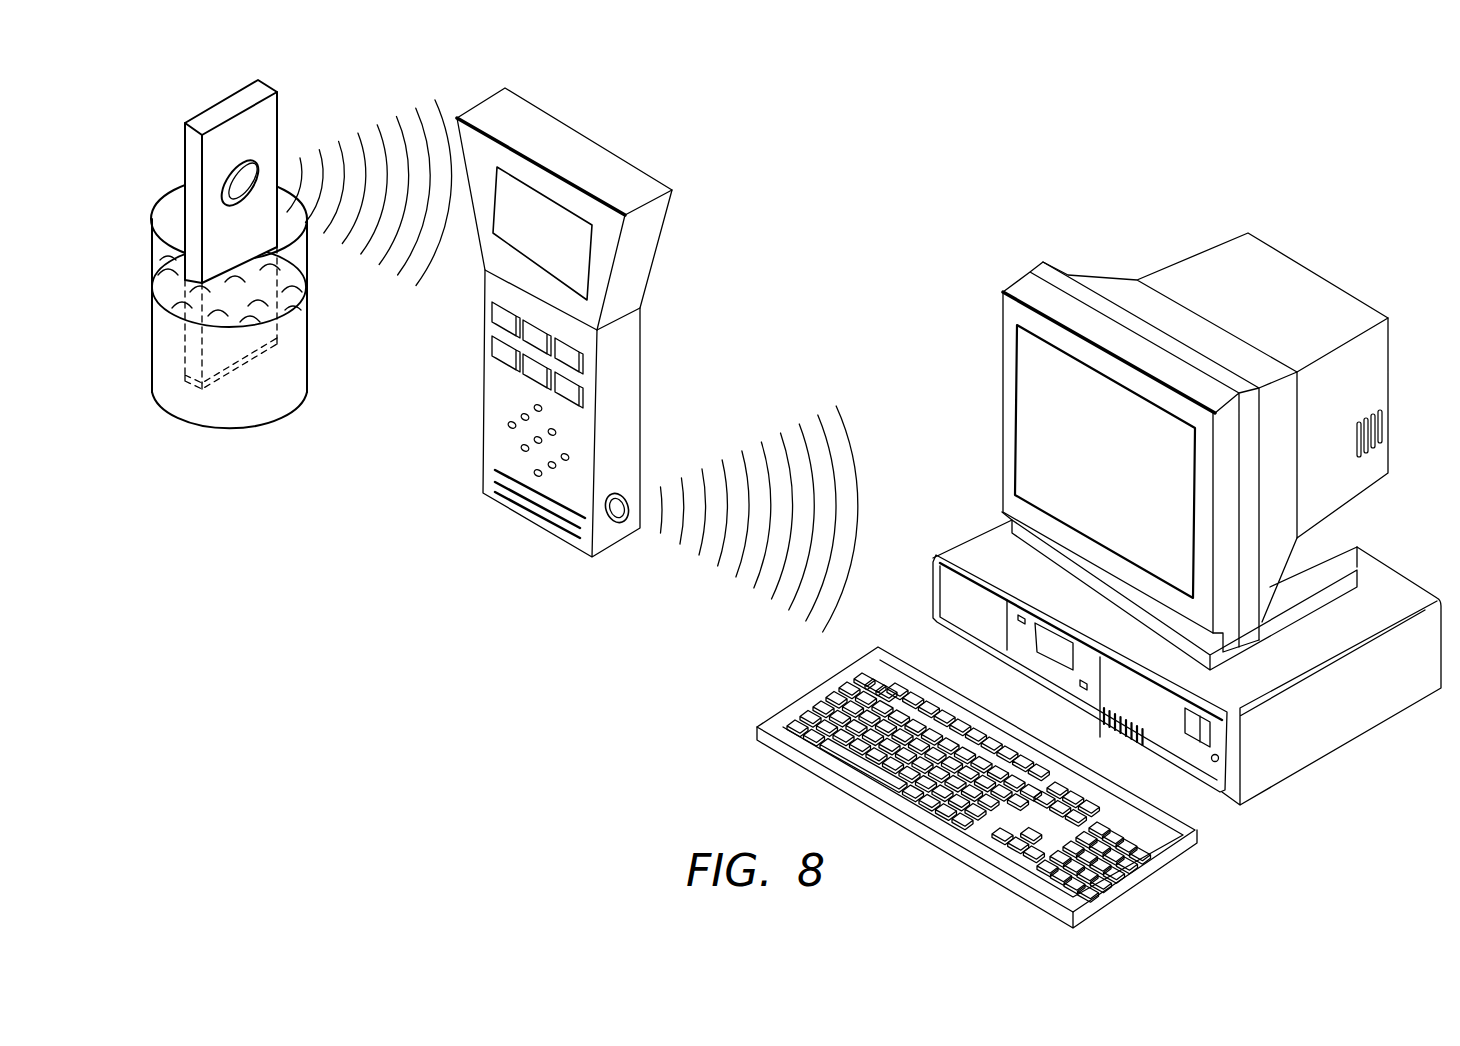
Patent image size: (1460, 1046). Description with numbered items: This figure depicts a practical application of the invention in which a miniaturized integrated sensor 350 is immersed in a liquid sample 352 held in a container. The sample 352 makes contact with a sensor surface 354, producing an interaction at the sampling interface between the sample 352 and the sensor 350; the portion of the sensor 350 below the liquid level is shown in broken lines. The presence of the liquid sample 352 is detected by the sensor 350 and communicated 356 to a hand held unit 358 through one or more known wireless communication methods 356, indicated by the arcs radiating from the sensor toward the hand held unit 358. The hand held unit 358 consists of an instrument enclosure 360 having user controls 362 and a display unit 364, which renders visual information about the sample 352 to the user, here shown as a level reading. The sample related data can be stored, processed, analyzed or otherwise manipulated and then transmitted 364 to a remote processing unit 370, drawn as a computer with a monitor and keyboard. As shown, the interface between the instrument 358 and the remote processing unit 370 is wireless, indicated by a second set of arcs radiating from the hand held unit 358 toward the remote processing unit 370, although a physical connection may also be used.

The miniaturized integrated sensor 350 is at (212, 118).
The liquid sample 352 is at (180, 272).
The sensor surface 354 is at (223, 373).
The wireless communication 356 is at (382, 286).
The hand held unit 358 is at (637, 177).
The instrument enclosure 360 is at (498, 506).
The user controls 362 is at (500, 355).
The display unit 364 is at (751, 441).
The remote processing unit 370 is at (1410, 586).